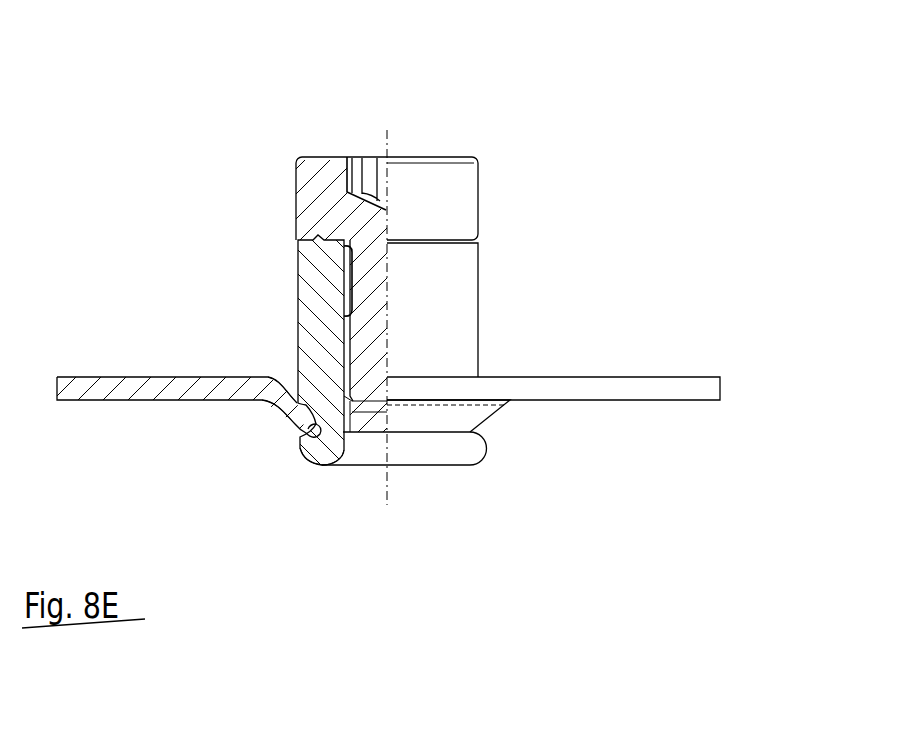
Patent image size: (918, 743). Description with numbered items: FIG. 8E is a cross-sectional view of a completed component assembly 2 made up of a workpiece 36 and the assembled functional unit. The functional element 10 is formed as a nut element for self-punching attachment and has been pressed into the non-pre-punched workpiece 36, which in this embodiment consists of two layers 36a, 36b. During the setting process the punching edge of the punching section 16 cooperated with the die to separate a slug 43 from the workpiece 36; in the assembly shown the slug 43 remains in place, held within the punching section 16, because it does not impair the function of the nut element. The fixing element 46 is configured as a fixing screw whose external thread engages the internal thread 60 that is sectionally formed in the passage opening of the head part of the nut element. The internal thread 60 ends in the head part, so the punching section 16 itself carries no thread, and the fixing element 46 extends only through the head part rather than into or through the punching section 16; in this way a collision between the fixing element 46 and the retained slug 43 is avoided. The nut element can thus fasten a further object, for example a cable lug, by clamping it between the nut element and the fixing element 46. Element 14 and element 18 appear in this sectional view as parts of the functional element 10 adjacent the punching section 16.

The fastening arrangement 2 is at (439, 223).
The fixing element 46 is at (493, 197).
The functional element 10 is at (283, 276).
The internal thread 60 is at (350, 290).
The workpiece 36 is at (98, 377).
The layer of the workpiece 36a is at (185, 376).
The layer of the workpiece 36b is at (184, 401).
The rolled plate edge 14 is at (298, 429).
The punching section 16 is at (292, 462).
The rounded end 18 is at (313, 464).
The slug 43 is at (366, 433).